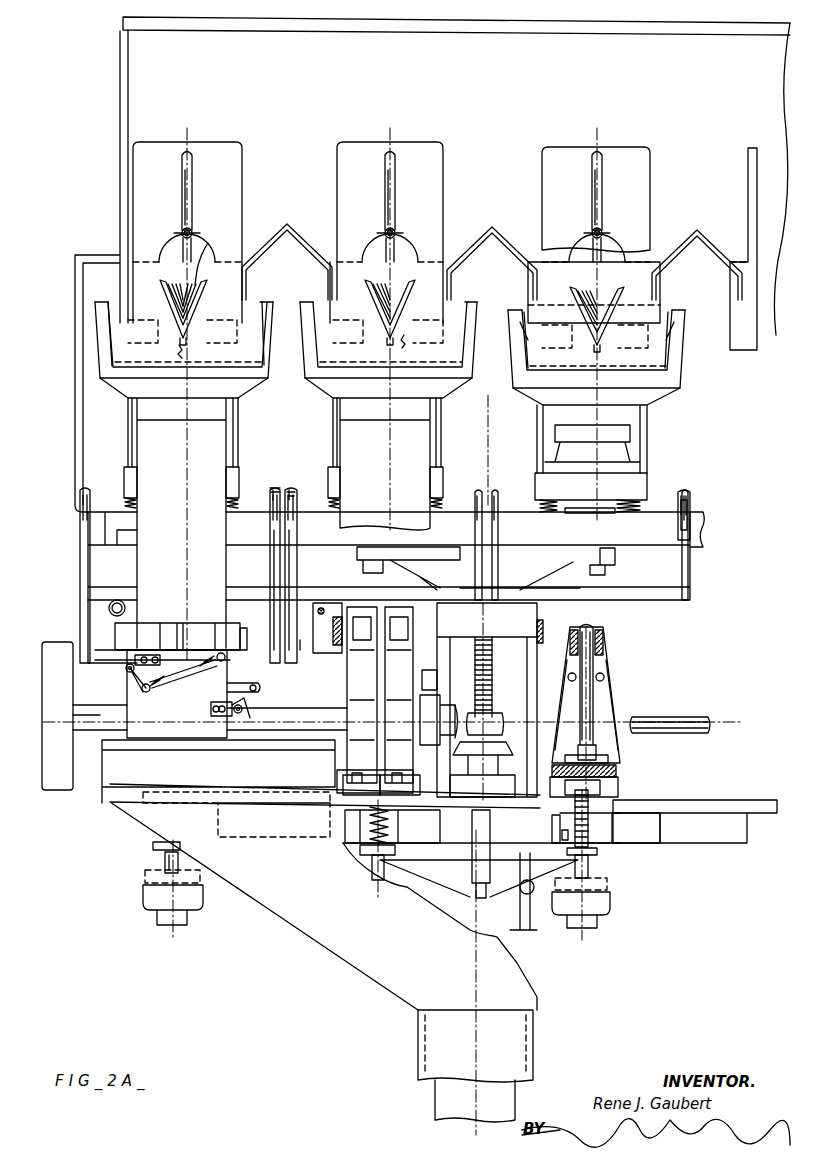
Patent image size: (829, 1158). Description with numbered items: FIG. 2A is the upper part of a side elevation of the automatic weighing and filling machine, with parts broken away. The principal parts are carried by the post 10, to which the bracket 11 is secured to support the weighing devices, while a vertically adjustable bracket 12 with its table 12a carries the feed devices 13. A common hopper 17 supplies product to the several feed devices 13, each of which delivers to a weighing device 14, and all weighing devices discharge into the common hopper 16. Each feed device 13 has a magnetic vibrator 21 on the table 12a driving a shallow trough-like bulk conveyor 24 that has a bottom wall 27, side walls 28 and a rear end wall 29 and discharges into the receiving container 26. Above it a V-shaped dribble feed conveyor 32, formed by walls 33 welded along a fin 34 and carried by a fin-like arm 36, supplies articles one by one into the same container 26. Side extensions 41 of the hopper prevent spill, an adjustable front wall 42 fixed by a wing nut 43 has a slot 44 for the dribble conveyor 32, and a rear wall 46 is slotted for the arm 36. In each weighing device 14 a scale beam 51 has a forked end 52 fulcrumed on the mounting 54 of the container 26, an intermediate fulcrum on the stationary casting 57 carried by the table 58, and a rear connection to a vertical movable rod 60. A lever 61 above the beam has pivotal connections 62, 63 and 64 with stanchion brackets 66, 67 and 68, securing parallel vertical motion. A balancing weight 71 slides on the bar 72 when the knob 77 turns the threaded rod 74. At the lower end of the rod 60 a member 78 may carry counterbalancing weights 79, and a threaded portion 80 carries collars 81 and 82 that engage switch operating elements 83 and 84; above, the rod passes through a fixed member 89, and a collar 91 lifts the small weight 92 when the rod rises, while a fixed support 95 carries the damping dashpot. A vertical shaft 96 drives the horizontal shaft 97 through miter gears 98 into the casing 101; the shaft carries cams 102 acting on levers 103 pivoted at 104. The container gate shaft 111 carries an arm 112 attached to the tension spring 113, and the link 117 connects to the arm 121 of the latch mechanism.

The post 10 is at (438, 1105).
The bracket 11 is at (528, 922).
The bracket 12 is at (608, 560).
The table 12a is at (700, 520).
The feed device 13 is at (262, 276).
The weighing device 14 is at (112, 556).
The common hopper 16 is at (279, 920).
The hopper 17 is at (140, 96).
The magnetic vibrator 21 is at (124, 470).
The bulk conveyor 24 is at (306, 359).
The receiving container 26 is at (258, 374).
The bottom wall 27 is at (202, 367).
The side walls 28 is at (668, 356).
The rear end wall 29 is at (256, 302).
The dribble feed conveyor 32 is at (209, 289).
The walls 33 is at (180, 268).
The fin 34 is at (181, 348).
The fin-like arm 36 is at (395, 268).
The side extensions 41 is at (118, 283).
The front wall 42 is at (138, 176).
The wing nut 43 is at (194, 230).
The slot 44 is at (213, 260).
The rear wall 46 is at (400, 345).
The scale beam 51 is at (339, 656).
The forked end 52 is at (242, 636).
The mounting 54 is at (205, 625).
The stationary casting 57 is at (360, 686).
The table 58 is at (690, 838).
The vertical movable rod 60 is at (594, 665).
The lever 61 is at (291, 488).
The pivotal connection 62 is at (270, 493).
The pivotal connection 63 is at (297, 496).
The pivotal connection 64 is at (690, 496).
The stanchion brackets 66 is at (80, 527).
The stanchion brackets 67 is at (297, 565).
The stanchion brackets 68 is at (499, 572).
The balancing weight 71 is at (112, 626).
The bar 72 is at (320, 632).
The rod 74 is at (316, 613).
The knob 77 is at (108, 608).
The member 78 is at (143, 894).
The counterbalancing weights 79 is at (147, 878).
The threaded portion 80 is at (385, 828).
The adjustable collar 81 is at (594, 805).
The adjustable collar 82 is at (153, 845).
The operating element 83 is at (592, 822).
The operating element 84 is at (565, 836).
The fixed member 89 is at (617, 766).
The adjustable collar 91 is at (600, 785).
The small weight 92 is at (608, 752).
The fixed support 95 is at (602, 680).
The vertical shaft 96 is at (472, 865).
The horizontal shaft 97 is at (495, 712).
The miter gears 98 is at (450, 754).
The casing 101 is at (45, 688).
The cam 102 is at (425, 695).
The lever 103 is at (432, 669).
The pivot 104 is at (452, 672).
The shaft 111 is at (127, 672).
The arm 112 is at (145, 692).
The tension spring 113 is at (185, 672).
The link 117 is at (242, 683).
The arm 121 is at (245, 712).